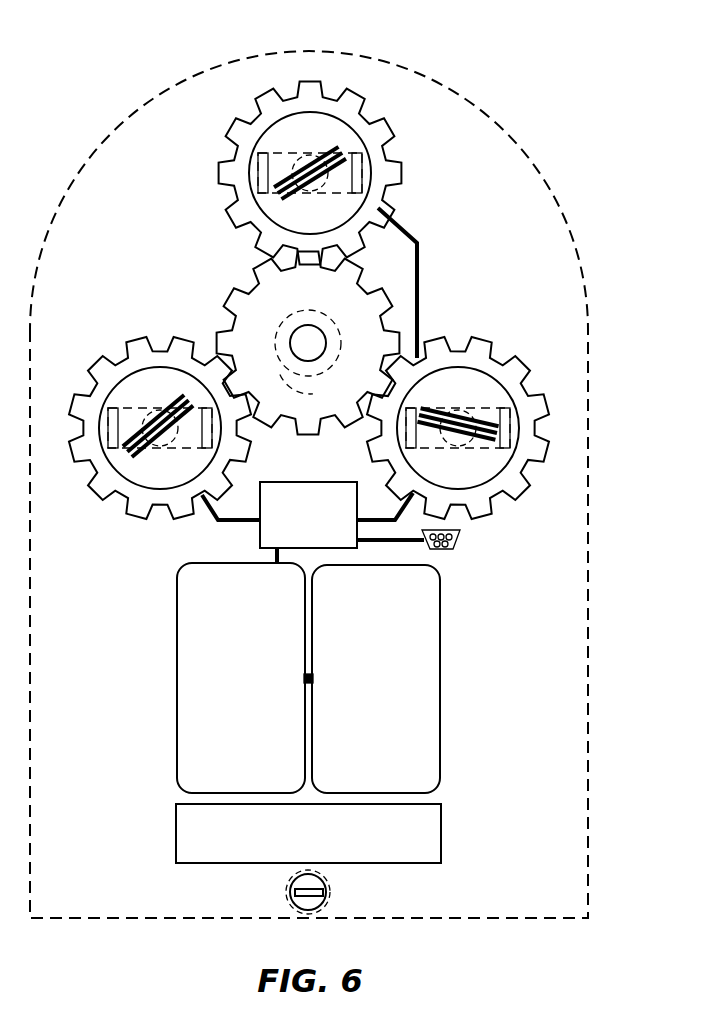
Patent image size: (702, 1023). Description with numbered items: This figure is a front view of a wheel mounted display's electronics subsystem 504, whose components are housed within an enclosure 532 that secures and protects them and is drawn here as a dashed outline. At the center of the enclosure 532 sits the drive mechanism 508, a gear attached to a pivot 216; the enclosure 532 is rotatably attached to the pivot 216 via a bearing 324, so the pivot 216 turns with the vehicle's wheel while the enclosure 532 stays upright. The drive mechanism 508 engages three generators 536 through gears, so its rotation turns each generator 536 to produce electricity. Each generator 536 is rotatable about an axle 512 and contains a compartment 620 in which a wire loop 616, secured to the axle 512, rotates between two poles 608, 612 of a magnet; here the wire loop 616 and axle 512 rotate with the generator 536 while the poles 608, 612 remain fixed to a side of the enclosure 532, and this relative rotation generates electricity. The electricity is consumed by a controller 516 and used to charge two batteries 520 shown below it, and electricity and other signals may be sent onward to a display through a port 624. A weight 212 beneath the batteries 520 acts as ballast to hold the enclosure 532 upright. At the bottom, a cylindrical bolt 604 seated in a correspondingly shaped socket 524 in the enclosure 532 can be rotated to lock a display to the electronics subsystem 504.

The electronics subsystem 504 is at (447, 58).
The enclosure 532 is at (138, 110).
The drive mechanism 508 is at (237, 292).
The pivot 216 is at (308, 324).
The bearing 324 is at (298, 385).
The generator 536 is at (222, 192).
The pole of magnet 612 is at (360, 143).
The pole of magnet 608 is at (262, 140).
The axle 512 is at (308, 152).
The wire loop 616 is at (282, 192).
The compartment 620 is at (328, 100).
The controller 516 is at (330, 527).
The battery 520 is at (308, 678).
The weight 212 is at (308, 833).
The port 624 is at (448, 550).
The bolt 604 is at (327, 892).
The socket 524 is at (290, 895).